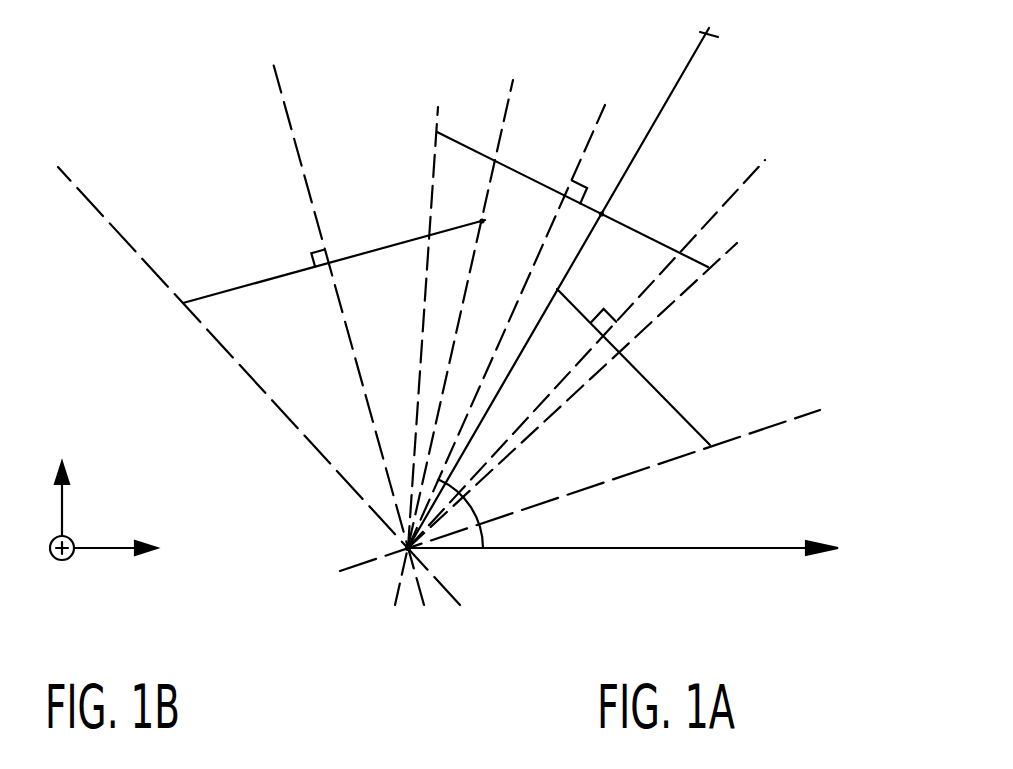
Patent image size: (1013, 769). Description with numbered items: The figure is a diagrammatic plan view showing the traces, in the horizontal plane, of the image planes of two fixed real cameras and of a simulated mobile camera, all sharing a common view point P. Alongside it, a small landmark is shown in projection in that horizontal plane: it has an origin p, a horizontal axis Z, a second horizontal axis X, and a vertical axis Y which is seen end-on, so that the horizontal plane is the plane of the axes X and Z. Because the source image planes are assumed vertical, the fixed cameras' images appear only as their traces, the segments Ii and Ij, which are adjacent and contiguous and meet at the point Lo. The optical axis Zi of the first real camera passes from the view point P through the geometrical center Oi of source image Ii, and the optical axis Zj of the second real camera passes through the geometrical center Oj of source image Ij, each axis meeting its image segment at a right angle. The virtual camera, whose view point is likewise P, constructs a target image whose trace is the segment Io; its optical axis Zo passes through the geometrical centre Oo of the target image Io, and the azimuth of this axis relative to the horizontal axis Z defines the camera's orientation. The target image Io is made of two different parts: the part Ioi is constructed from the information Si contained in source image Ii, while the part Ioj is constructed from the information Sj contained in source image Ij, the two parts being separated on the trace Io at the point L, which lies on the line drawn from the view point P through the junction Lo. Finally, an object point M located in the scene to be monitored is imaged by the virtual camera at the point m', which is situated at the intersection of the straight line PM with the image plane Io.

In FIG. 1A, the view point P is at (396, 545).
In FIG. 1A, the horizontal axis Pz Z is at (623, 568).
In FIG. 1B, the horizontal axis Pz Z is at (115, 566).
In FIG. 1B, the horizontal axis Px X is at (69, 496).
In FIG. 1B, the vertical axis Py Y is at (53, 540).
In FIG. 1B, the origin of landmark p is at (61, 574).
In FIG. 1A, the object point M is at (577, 284).
In FIG. 1A, the image point of M m' is at (639, 179).
In FIG. 1A, the optical axis of virtual camera Zo is at (516, 323).
In FIG. 1A, the optical axis of camera Ci Zi is at (337, 316).
In FIG. 1A, the optical axis of camera Cj Zj is at (599, 339).
In FIG. 1A, the boundary point on target image L is at (504, 155).
In FIG. 1A, the junction point of contiguous images Lo is at (495, 222).
In FIG. 1A, the target image Io is at (450, 126).
In FIG. 1A, the first target image part Ioi is at (478, 152).
In FIG. 1A, the second target image part Ioj is at (662, 242).
In FIG. 1A, the geometrical centre of target image Oo is at (561, 178).
In FIG. 1A, the source image plane of camera Ci Ii is at (248, 274).
In FIG. 1A, the geometrical center of source image Ii Oi is at (298, 254).
In FIG. 1A, the source image part in Ii Si is at (455, 226).
In FIG. 1A, the source image plane of camera Cj Ij is at (670, 393).
In FIG. 1A, the geometrical center of source image Ij Oj is at (600, 350).
In FIG. 1A, the source image part in Ij Sj is at (578, 313).